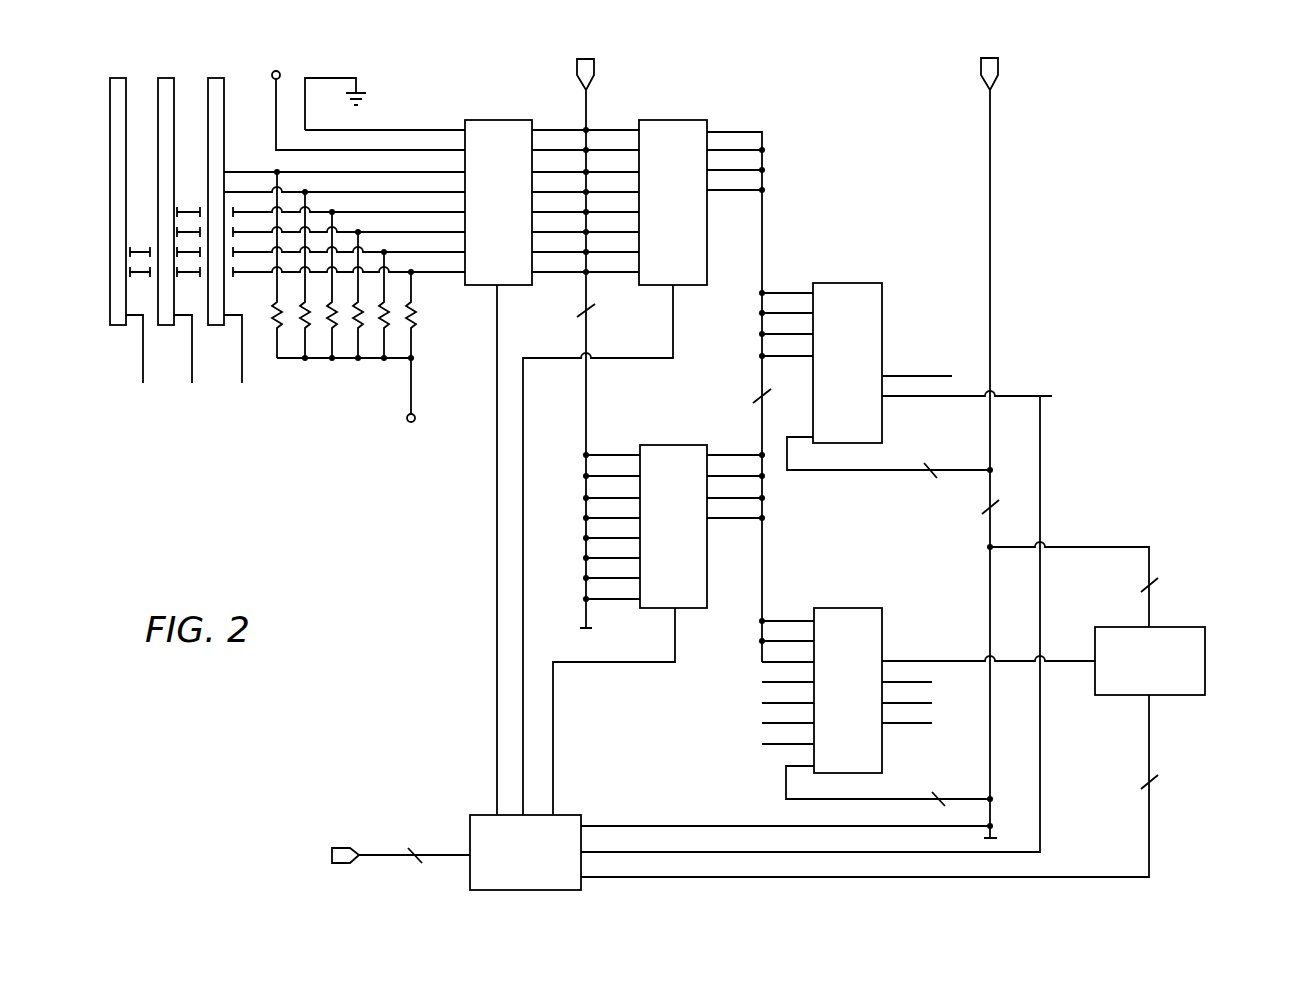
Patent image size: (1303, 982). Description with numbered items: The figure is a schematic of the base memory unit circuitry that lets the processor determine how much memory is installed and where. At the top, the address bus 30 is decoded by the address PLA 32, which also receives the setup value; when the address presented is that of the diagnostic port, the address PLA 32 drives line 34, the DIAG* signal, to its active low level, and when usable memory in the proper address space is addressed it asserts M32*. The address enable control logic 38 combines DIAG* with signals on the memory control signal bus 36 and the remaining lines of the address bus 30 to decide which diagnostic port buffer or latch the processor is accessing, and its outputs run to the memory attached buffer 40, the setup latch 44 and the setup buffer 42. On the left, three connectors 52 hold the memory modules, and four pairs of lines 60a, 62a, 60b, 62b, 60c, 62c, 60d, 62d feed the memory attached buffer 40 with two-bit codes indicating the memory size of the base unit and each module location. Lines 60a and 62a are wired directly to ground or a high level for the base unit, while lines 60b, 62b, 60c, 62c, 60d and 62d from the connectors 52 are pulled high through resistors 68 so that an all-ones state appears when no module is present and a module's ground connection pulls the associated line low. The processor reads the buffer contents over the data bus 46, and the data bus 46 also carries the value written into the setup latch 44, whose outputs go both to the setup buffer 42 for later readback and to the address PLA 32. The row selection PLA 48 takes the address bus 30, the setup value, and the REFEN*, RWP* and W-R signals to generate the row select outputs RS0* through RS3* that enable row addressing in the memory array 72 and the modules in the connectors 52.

The connectors 52 is at (118, 78).
The line 60a is at (400, 130).
The line 62a is at (400, 150).
The line 60b is at (400, 172).
The line 62b is at (400, 192).
The line 60c is at (400, 212).
The line 62c is at (400, 232).
The line 60d is at (400, 252).
The line 62d is at (400, 272).
The resistors 68 is at (272, 320).
The memory attached buffer 40 is at (480, 287).
The data bus 46 is at (588, 114).
The setup latch 44 is at (655, 287).
The setup buffer 42 is at (655, 610).
The address PLA 32 is at (884, 320).
The line 34 is at (958, 398).
The row selection PLA 48 is at (884, 624).
The address bus 30 is at (992, 115).
The memory array 72 is at (1117, 697).
The memory control signal bus 36 is at (385, 853).
The address enable control logic 38 is at (468, 828).